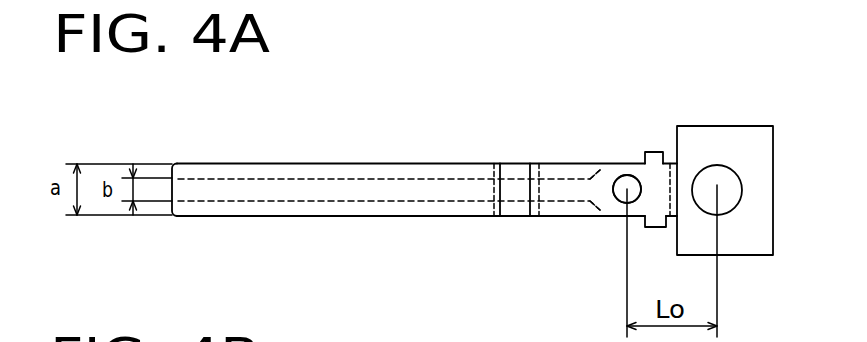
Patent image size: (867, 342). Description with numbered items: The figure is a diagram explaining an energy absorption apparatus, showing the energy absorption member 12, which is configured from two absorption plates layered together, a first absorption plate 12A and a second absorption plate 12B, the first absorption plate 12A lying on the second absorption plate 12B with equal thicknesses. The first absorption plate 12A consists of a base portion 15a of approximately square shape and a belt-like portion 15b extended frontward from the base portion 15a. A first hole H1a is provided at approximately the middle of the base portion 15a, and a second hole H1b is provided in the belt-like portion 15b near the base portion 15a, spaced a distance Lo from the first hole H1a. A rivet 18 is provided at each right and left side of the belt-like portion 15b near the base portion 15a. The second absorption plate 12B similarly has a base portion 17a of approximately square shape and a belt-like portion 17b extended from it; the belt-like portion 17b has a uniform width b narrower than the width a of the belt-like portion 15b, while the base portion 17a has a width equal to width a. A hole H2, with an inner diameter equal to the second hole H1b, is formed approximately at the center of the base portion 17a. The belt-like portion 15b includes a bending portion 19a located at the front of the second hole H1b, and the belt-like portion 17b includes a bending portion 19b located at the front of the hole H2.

The energy absorption member 12 is at (424, 170).
The first absorption plate 12A is at (407, 217).
The second absorption plate 12B is at (397, 177).
The base portion 15a is at (750, 126).
The belt-like portion 15b is at (293, 163).
The base portion 17a is at (590, 203).
The belt-like portion 17b is at (326, 202).
The rivet 18 is at (655, 151).
The bending portion 19a is at (505, 168).
The bending portion 19b is at (582, 190).
The first hole H1a is at (742, 189).
The second hole H1b is at (623, 176).
The hole H2 is at (618, 203).